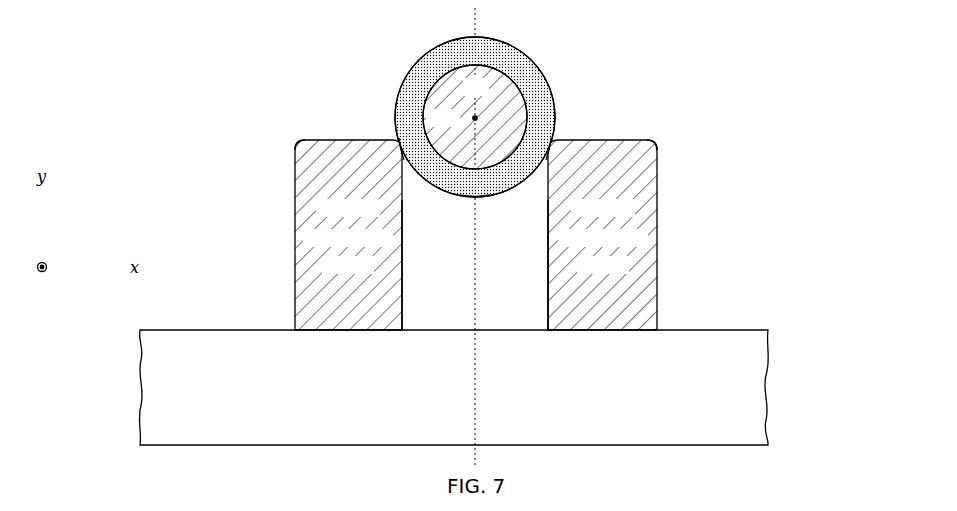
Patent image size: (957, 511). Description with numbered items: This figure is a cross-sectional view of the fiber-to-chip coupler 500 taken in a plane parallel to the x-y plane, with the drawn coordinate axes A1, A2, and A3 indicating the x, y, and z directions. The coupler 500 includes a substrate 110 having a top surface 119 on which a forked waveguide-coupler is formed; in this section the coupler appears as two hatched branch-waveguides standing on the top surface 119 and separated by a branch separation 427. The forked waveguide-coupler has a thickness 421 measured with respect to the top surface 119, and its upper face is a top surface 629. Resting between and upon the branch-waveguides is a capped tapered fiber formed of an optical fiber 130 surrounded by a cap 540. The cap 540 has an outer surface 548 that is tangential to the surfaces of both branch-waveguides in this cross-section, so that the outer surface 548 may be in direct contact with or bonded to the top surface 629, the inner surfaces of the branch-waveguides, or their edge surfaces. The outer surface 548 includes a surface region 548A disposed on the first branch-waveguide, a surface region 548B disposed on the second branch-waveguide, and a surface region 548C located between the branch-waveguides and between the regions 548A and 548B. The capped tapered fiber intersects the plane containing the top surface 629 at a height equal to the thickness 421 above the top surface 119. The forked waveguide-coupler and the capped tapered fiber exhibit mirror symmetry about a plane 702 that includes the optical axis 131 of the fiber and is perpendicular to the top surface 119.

The fiber-to-chip coupler 500 is at (740, 70).
The cap 540 is at (418, 60).
The outer surface 548 is at (531, 56).
The surface region 548A is at (551, 148).
The surface region 548B is at (399, 148).
The surface region 548C is at (482, 201).
The optical fiber 130 is at (475, 117).
The optical axis 131 is at (474, 118).
The top surface 629 is at (306, 137).
The branch separation 427 is at (404, 322).
The thickness 421 is at (677, 135).
The top surface 119 is at (166, 328).
The substrate 110 is at (453, 387).
The plane 702 is at (476, 397).
The first axis A1 is at (127, 267).
The second axis A2 is at (42, 194).
The third axis A3 is at (45, 264).